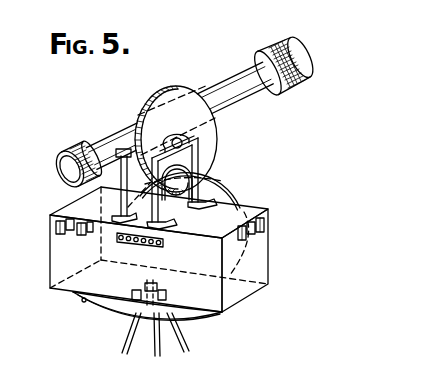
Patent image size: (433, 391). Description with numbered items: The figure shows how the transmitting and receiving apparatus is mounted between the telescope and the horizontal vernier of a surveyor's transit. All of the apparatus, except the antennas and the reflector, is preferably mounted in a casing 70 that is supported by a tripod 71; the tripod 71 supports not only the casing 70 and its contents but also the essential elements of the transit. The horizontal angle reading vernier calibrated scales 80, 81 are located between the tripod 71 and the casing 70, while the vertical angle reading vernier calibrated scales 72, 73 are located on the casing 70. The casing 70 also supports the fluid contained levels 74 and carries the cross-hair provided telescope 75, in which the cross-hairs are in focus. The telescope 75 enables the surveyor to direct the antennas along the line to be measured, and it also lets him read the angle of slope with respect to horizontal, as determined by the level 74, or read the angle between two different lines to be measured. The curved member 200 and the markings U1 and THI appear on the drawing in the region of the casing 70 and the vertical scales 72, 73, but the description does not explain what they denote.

The telescope 75 is at (226, 81).
The vertical angle reading vernier calibrated scale 73 is at (217, 141).
The vertical angle reading vernier calibrated scale 72 is at (183, 206).
The arc sector 200 is at (223, 192).
The casing 70 is at (268, 274).
The fluid contained levels 74 is at (71, 235).
The terminal strip U1 is at (164, 247).
The terminal strip label THI is at (128, 251).
The horizontal angle reading vernier calibrated scale 80 is at (110, 310).
The horizontal angle reading vernier calibrated scale 81 is at (81, 301).
The tripod 71 is at (170, 338).